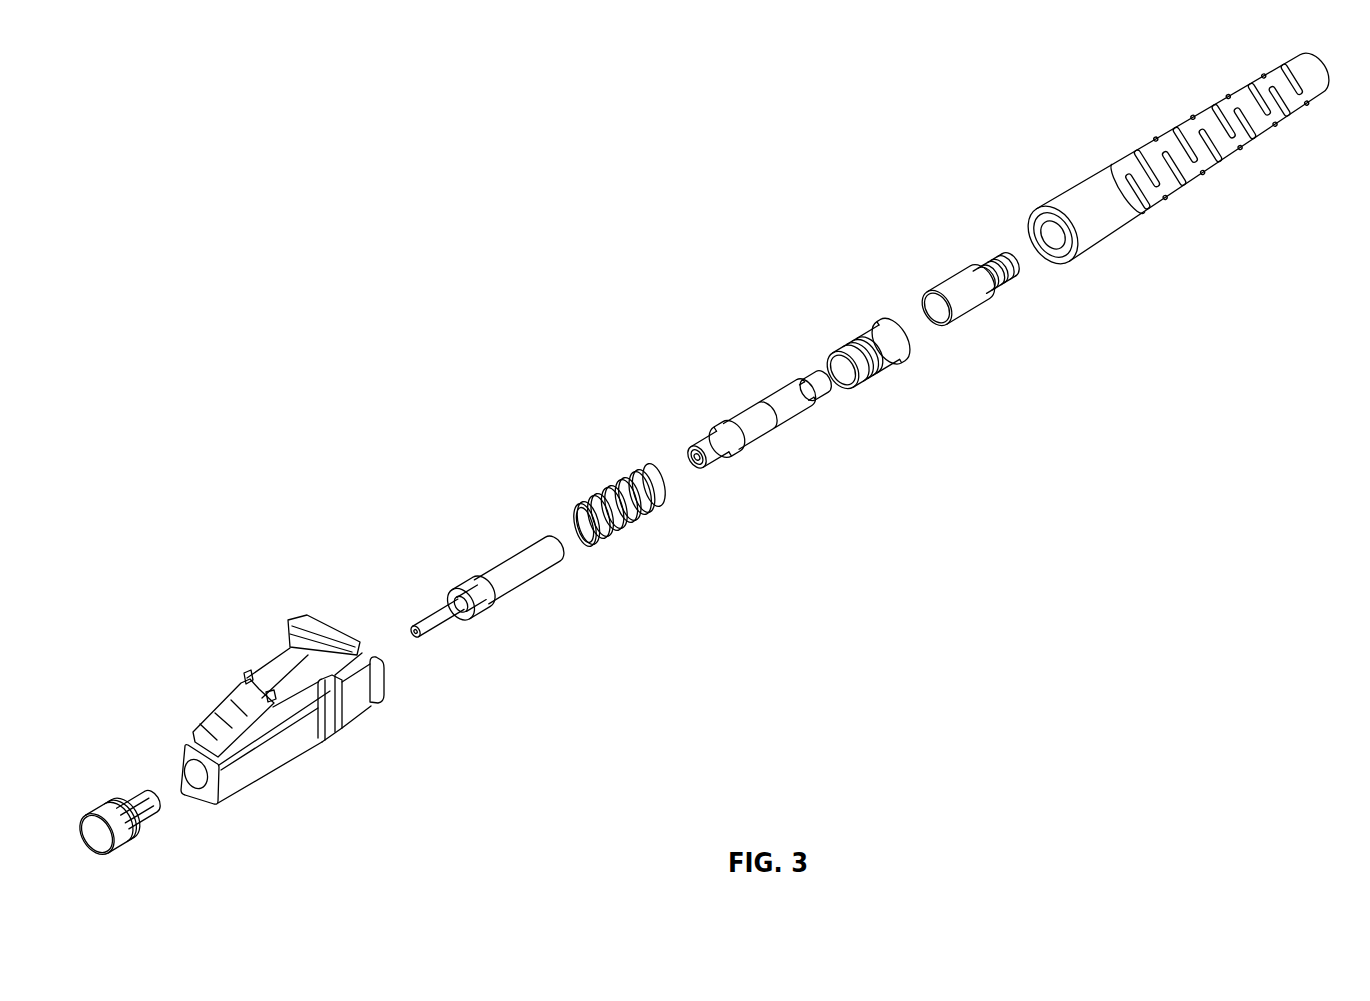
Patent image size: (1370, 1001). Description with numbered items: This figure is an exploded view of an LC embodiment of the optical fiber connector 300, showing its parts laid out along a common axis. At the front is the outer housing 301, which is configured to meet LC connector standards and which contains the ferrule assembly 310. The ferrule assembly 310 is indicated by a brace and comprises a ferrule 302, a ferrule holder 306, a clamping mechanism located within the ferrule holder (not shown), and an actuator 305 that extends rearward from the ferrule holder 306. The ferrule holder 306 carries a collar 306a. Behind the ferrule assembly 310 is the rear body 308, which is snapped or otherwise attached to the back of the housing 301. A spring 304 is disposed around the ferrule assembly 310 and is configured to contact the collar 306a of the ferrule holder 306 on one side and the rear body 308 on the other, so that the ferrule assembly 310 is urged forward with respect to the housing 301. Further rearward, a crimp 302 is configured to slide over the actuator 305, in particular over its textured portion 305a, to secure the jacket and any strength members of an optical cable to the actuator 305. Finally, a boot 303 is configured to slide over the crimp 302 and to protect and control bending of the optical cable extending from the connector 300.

The connector 300 is at (239, 327).
The outer housing 301 is at (265, 757).
The ferrule / crimp 302 is at (440, 628).
The boot 303 is at (1100, 230).
The spring 304 is at (97, 847).
The actuator 305 is at (764, 388).
The textured portion 305a is at (802, 377).
The ferrule holder 306 is at (506, 604).
The collar 306a is at (533, 562).
The rear body 308 is at (880, 357).
The ferrule assembly 310 is at (385, 567).